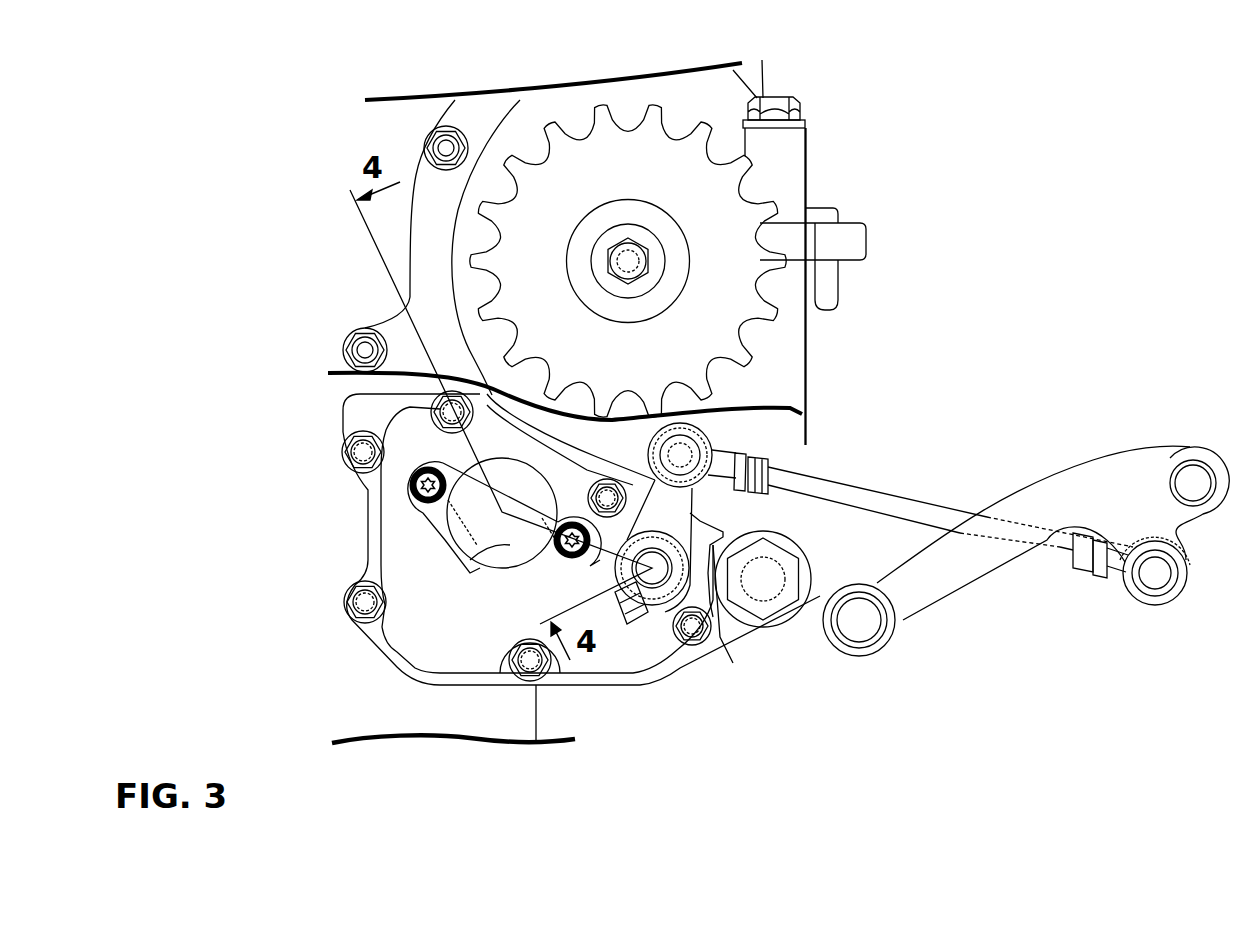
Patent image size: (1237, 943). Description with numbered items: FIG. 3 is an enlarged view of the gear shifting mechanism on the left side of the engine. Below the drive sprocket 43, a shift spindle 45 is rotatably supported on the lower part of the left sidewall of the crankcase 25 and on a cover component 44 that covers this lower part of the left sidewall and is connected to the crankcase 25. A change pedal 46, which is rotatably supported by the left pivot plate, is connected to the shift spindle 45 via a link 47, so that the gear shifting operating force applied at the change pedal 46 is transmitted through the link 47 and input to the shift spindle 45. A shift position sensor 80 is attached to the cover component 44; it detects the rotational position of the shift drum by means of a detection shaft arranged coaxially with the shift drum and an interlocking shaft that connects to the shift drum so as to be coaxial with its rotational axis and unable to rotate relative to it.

The crankcase 25 is at (447, 708).
The drive sprocket 43 is at (588, 150).
The cover component 44 is at (400, 546).
The shift spindle 45 is at (655, 578).
The change pedal 46 is at (945, 575).
The link 47 is at (897, 507).
The shift position sensor 80 is at (512, 562).